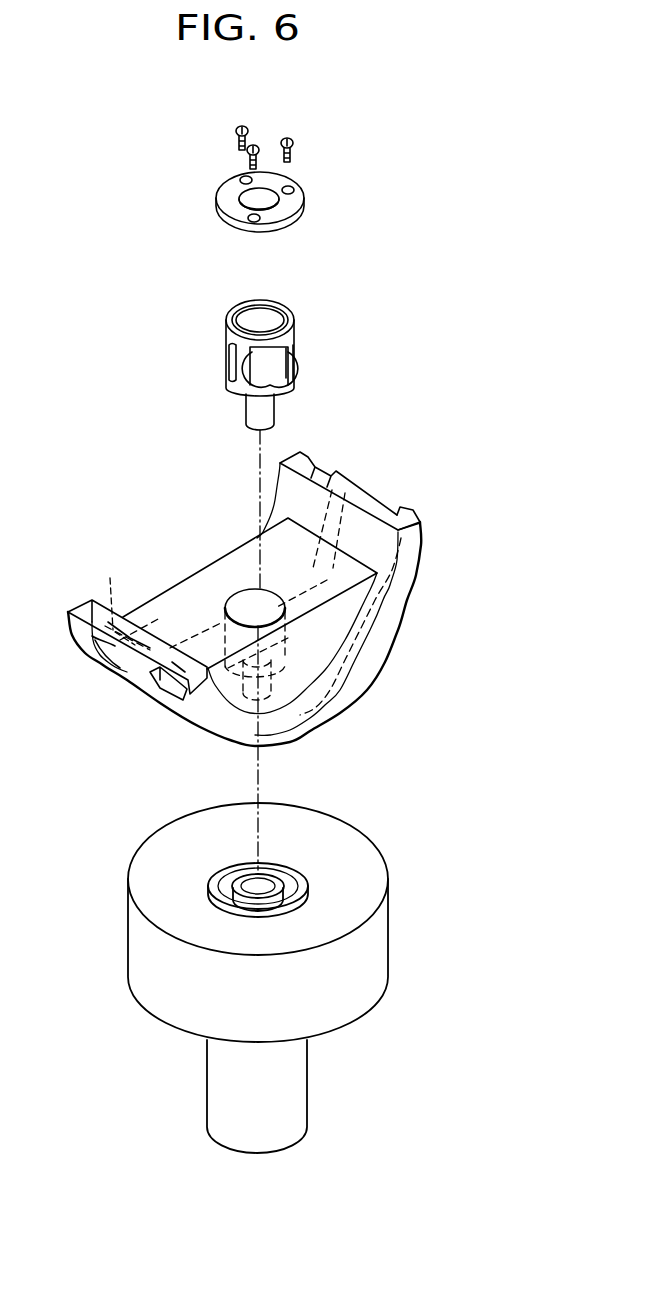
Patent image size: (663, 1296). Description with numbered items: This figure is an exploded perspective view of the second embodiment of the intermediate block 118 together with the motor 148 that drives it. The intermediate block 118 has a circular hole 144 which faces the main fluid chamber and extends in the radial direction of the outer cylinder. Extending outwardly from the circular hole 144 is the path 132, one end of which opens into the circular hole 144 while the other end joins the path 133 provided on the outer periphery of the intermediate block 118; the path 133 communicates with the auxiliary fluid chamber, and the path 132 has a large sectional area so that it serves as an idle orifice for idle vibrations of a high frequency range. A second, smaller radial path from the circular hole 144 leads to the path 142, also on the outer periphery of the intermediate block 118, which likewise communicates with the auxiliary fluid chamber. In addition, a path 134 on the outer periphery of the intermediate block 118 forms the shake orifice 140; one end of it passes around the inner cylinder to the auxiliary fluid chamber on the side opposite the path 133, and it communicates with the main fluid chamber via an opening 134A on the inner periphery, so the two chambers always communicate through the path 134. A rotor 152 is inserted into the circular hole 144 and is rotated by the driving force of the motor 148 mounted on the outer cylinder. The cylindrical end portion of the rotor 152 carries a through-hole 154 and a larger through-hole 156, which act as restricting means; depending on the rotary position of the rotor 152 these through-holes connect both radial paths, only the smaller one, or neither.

The intermediate block 118 is at (282, 604).
The path 132 is at (163, 703).
The path 133 is at (143, 660).
The path 134 is at (322, 468).
The opening 134A is at (99, 596).
The shake orifice 140 is at (329, 529).
The path 142 is at (412, 503).
The circular hole 144 is at (280, 611).
The motor 148 is at (307, 1085).
The rotor 152 is at (316, 310).
The through-hole 154 is at (300, 362).
The through-hole 156 is at (231, 367).